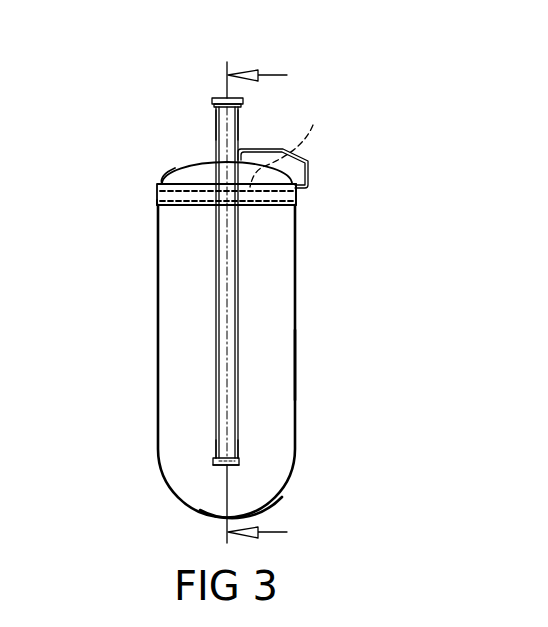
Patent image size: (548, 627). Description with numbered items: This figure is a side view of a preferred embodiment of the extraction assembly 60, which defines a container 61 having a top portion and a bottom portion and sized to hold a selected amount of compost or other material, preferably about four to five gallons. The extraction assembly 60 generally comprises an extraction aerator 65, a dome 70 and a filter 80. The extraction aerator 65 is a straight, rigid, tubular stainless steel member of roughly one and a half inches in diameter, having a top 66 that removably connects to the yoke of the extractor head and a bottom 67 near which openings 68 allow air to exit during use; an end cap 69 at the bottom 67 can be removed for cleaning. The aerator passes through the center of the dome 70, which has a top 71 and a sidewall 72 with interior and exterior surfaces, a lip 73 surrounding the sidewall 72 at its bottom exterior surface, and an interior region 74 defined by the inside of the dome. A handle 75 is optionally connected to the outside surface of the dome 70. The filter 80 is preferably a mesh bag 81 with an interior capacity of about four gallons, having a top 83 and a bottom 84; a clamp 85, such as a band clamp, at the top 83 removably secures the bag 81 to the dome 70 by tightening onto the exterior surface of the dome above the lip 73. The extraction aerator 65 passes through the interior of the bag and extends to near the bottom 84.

The extraction assembly 60 is at (280, 273).
The container 61 is at (296, 325).
The extraction aerator 65 is at (216, 160).
The top 66 is at (212, 99).
The bottom 67 is at (215, 468).
The openings 68 is at (215, 455).
The end cap 69 is at (215, 462).
The dome 70 is at (172, 170).
The top 71 is at (216, 131).
The sidewall 72 is at (165, 176).
The lip 73 is at (158, 198).
The interior region 74 is at (292, 141).
The handle 75 is at (308, 160).
The filter 80 is at (296, 400).
The mesh bag 81 is at (185, 358).
The top 83 is at (158, 205).
The bottom 84 is at (282, 497).
The clamp 85 is at (296, 197).